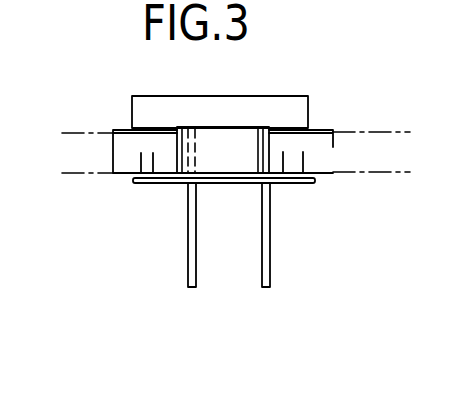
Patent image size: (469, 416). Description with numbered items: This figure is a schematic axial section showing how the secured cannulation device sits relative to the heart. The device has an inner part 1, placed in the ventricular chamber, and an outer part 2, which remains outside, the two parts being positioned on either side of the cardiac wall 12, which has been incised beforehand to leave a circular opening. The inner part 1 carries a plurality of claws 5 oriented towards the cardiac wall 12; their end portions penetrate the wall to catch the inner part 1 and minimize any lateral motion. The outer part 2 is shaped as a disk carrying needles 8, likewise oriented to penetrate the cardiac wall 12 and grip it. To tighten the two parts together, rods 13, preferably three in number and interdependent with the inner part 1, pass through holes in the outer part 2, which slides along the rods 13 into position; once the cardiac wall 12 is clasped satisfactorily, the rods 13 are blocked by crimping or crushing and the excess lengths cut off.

The inner part 1 is at (243, 97).
The outer part 2 is at (293, 185).
The claws 5 is at (112, 141).
The needles 8 is at (303, 155).
The cardiac wall 12 is at (104, 157).
The rods 13 is at (198, 277).